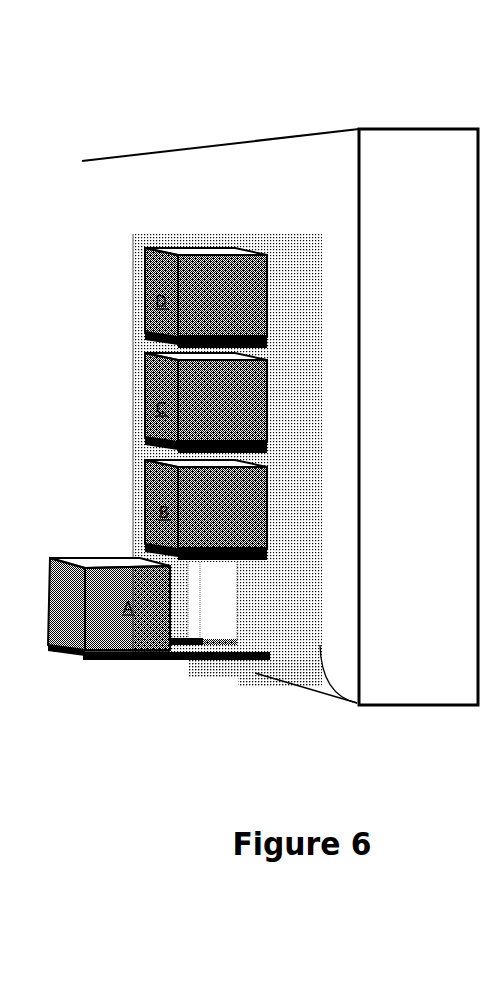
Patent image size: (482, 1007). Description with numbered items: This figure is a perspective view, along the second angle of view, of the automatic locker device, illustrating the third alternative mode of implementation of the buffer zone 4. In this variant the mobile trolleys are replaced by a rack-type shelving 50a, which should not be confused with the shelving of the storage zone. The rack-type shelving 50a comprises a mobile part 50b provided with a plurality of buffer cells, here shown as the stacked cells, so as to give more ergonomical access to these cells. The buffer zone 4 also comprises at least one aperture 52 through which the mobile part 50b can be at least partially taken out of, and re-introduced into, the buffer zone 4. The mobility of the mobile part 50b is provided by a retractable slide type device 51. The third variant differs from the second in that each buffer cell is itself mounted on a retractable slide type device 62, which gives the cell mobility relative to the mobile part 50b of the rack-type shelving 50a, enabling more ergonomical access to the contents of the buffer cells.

The buffer zone 4 is at (320, 157).
The aperture 52 is at (300, 237).
The mobile part 50b is at (133, 447).
The rack-type shelving 50a is at (357, 703).
The retractable slide type device 62 is at (135, 663).
The retractable slide type device 51 is at (225, 677).